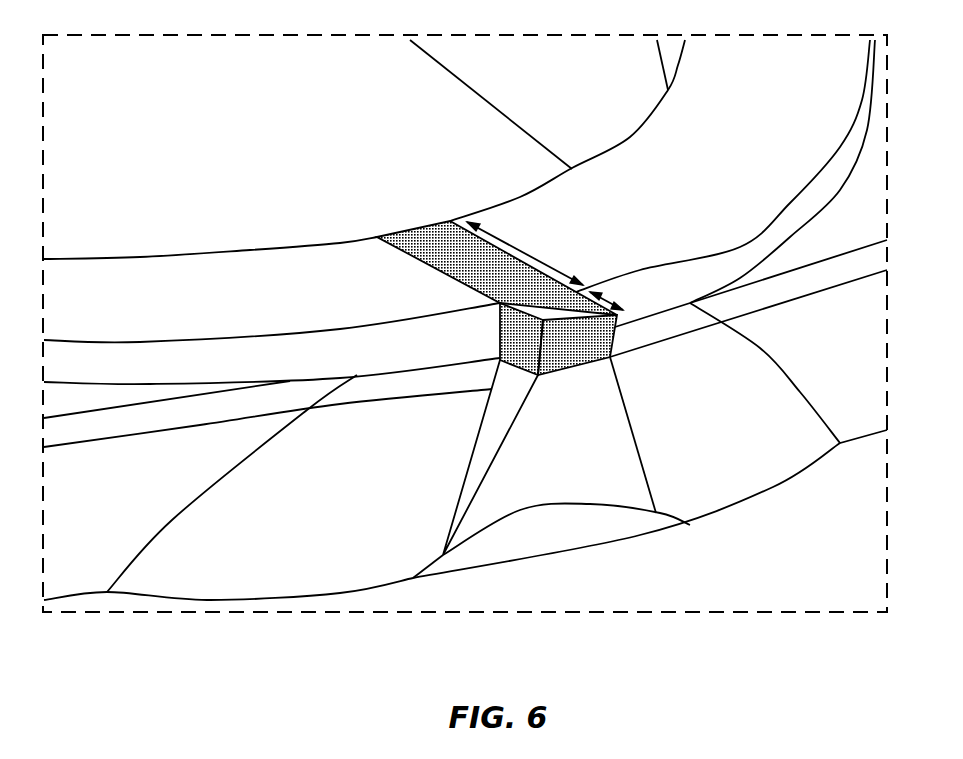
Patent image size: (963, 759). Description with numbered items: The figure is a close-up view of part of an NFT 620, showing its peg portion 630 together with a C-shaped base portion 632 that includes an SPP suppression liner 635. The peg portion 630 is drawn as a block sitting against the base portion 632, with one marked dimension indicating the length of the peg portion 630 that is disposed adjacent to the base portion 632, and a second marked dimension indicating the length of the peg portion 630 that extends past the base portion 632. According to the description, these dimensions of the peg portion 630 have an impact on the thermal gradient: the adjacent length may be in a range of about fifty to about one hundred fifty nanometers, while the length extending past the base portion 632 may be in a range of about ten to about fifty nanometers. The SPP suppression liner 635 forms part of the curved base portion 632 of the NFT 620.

The NFT 620 is at (320, 148).
The peg portion 630 is at (430, 237).
The SPP suppression liner 635 is at (267, 270).
The base portion 632 is at (270, 588).